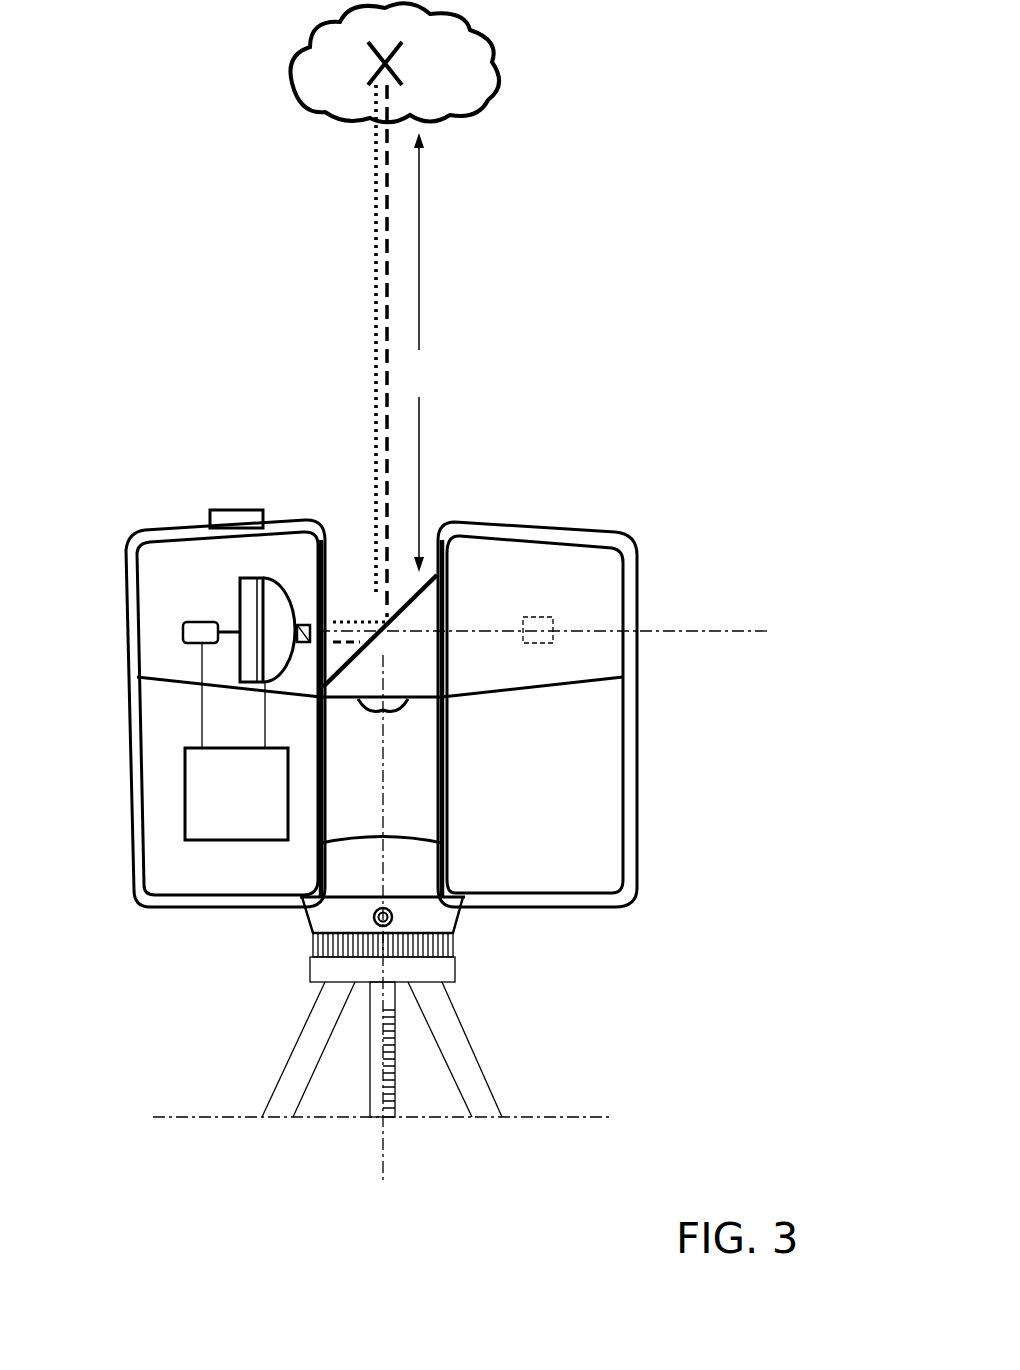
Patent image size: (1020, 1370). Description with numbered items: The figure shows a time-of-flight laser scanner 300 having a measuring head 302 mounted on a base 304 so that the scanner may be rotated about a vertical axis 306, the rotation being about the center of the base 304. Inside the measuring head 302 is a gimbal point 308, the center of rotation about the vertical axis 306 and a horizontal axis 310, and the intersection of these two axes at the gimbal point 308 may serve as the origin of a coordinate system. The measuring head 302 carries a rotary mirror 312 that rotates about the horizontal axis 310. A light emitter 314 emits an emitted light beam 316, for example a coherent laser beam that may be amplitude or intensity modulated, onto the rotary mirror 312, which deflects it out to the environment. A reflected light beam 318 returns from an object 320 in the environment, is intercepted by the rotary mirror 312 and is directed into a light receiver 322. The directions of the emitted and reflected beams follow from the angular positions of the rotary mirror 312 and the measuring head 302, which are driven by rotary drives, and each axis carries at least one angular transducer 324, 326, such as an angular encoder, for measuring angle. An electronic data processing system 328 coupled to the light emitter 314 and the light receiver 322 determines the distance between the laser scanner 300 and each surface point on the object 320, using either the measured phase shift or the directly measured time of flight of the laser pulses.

The laser scanner 300 is at (214, 298).
The measuring head 302 is at (635, 858).
The base 304 is at (298, 910).
The vertical axis 306 is at (383, 1125).
The gimbal point 308 is at (378, 615).
The horizontal axis 310 is at (710, 630).
The rotary mirror 312 is at (412, 672).
The light emitter 314 is at (303, 624).
The emitted light beam 316 is at (387, 262).
The reflected light beam 318 is at (376, 305).
The object 320 is at (500, 45).
The light receiver 322 is at (240, 598).
The angular transducer 324 is at (540, 617).
The angular transducer 326 is at (455, 937).
The electronic data processing system 328 is at (272, 843).